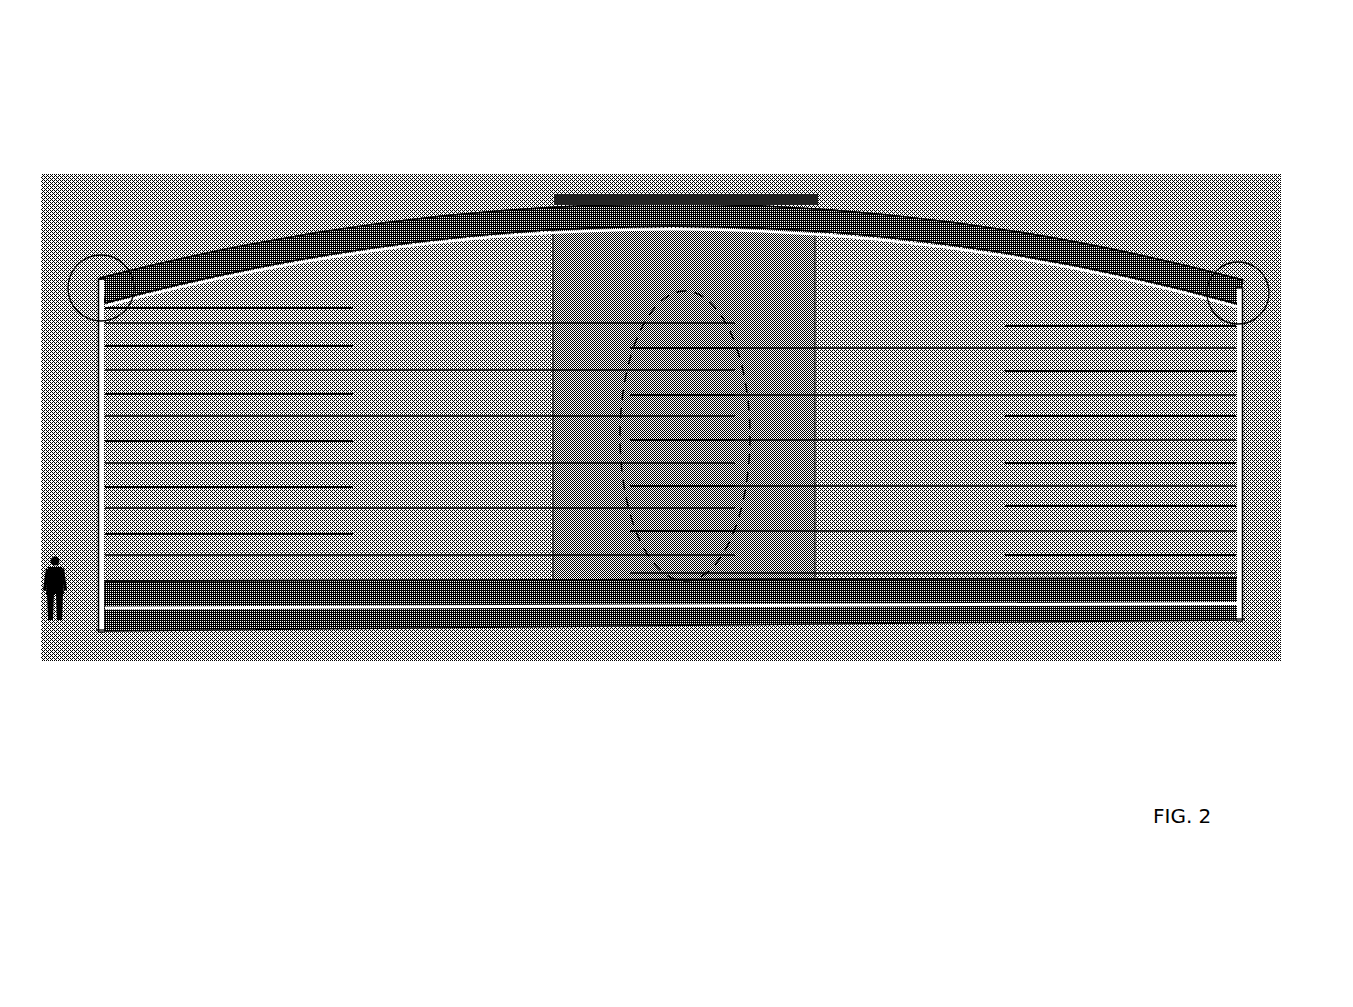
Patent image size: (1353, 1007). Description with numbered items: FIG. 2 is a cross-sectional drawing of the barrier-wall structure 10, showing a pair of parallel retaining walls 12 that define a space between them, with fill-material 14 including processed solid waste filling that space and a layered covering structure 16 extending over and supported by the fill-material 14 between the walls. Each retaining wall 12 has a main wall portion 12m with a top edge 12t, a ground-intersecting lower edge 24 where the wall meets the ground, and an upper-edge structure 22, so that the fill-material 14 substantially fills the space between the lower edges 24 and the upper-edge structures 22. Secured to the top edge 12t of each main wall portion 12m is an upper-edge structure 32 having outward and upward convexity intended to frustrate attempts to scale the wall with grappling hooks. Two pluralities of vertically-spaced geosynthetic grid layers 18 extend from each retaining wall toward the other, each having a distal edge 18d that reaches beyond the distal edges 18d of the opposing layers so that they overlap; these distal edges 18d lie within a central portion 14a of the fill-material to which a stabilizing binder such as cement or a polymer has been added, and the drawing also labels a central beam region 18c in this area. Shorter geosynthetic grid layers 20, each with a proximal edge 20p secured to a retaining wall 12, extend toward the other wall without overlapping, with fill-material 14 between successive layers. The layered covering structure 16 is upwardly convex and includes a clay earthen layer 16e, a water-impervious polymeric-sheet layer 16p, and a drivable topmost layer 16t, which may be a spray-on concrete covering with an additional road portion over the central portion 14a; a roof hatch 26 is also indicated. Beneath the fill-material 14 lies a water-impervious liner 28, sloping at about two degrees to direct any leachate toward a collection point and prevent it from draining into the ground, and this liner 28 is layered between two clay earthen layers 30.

The barrier-wall structure 10 is at (992, 123).
The retaining wall 12 is at (688, 523).
The main wall portion 12m is at (90, 559).
The top edge 12t is at (93, 270).
The fill-material 14 is at (875, 269).
The central portion 14a is at (603, 259).
The layered covering structure 16 is at (671, 218).
The clay earthen layer 16e is at (492, 208).
The water-impervious polymeric-sheet layer 16p is at (379, 237).
The drivable topmost layer 16t is at (270, 228).
The geosynthetic grid layers 18 is at (405, 362).
The central beam region 18c is at (700, 295).
The distal edge 18d is at (608, 385).
The geosynthetic grid layers 20 is at (332, 432).
The proximal edge 20p is at (1228, 500).
The upper-edge structure 22 is at (694, 207).
The ground-intersecting lower edge 24 is at (90, 624).
The roof hatch 26 is at (752, 186).
The water-impervious liner 28 is at (847, 597).
The clay earthen layers 30 is at (500, 588).
The upper-edge structure 32 is at (94, 247).